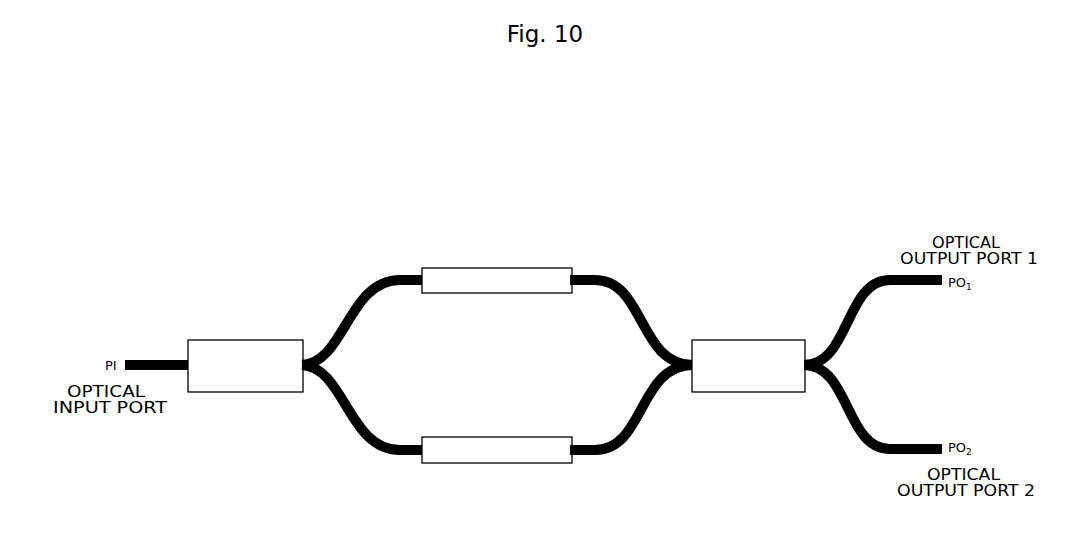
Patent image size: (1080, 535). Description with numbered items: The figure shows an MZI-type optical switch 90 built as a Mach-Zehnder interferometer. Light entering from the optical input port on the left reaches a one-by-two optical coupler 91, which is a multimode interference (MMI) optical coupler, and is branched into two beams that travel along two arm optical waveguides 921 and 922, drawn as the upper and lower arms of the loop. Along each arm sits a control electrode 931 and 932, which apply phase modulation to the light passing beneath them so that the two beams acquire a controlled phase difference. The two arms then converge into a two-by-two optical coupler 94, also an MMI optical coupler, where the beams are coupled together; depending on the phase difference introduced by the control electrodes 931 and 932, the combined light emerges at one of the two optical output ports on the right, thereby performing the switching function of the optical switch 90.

The MZI-type optical switch 90 is at (486, 172).
The 1×2 optical coupler 91 is at (242, 340).
The arm optical waveguide 921 is at (363, 287).
The arm optical waveguide 922 is at (363, 443).
The control electrode 931 is at (496, 268).
The control electrode 932 is at (497, 463).
The 2×2 optical coupler 94 is at (745, 340).